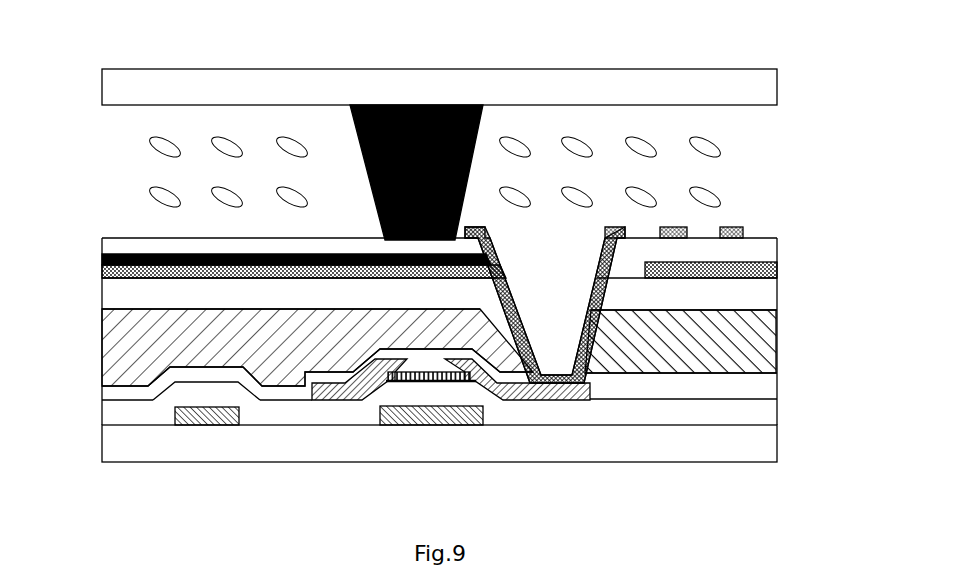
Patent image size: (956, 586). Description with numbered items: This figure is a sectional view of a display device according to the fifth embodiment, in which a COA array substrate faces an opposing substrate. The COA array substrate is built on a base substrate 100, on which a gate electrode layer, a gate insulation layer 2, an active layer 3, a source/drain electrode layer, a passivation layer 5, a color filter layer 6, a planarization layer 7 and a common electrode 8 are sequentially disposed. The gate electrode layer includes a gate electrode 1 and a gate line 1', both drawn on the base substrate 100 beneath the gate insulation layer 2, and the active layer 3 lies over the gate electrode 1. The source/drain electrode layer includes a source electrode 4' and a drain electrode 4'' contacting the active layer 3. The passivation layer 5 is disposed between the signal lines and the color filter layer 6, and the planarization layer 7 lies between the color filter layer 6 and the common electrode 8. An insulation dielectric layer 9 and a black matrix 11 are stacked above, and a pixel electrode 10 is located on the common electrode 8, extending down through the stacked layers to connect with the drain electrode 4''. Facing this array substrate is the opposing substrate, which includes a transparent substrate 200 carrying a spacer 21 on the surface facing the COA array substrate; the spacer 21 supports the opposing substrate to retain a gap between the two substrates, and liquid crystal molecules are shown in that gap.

The transparent substrate 200 is at (235, 86).
The spacer 21 is at (425, 105).
The base substrate 100 is at (150, 433).
The gate electrode 1 is at (431, 456).
The gate line 1' is at (207, 457).
The gate insulation layer 2 is at (287, 415).
The active layer 3 is at (433, 382).
The source electrode 4' is at (359, 433).
The drain electrode 4'' is at (517, 433).
The passivation layer 5 is at (138, 396).
The color filter layer 6 is at (282, 339).
The planarization layer 7 is at (258, 295).
The common electrode 8 is at (160, 277).
The insulation dielectric layer 9 is at (152, 248).
The pixel electrode 10 is at (565, 401).
The black matrix 11 is at (190, 264).